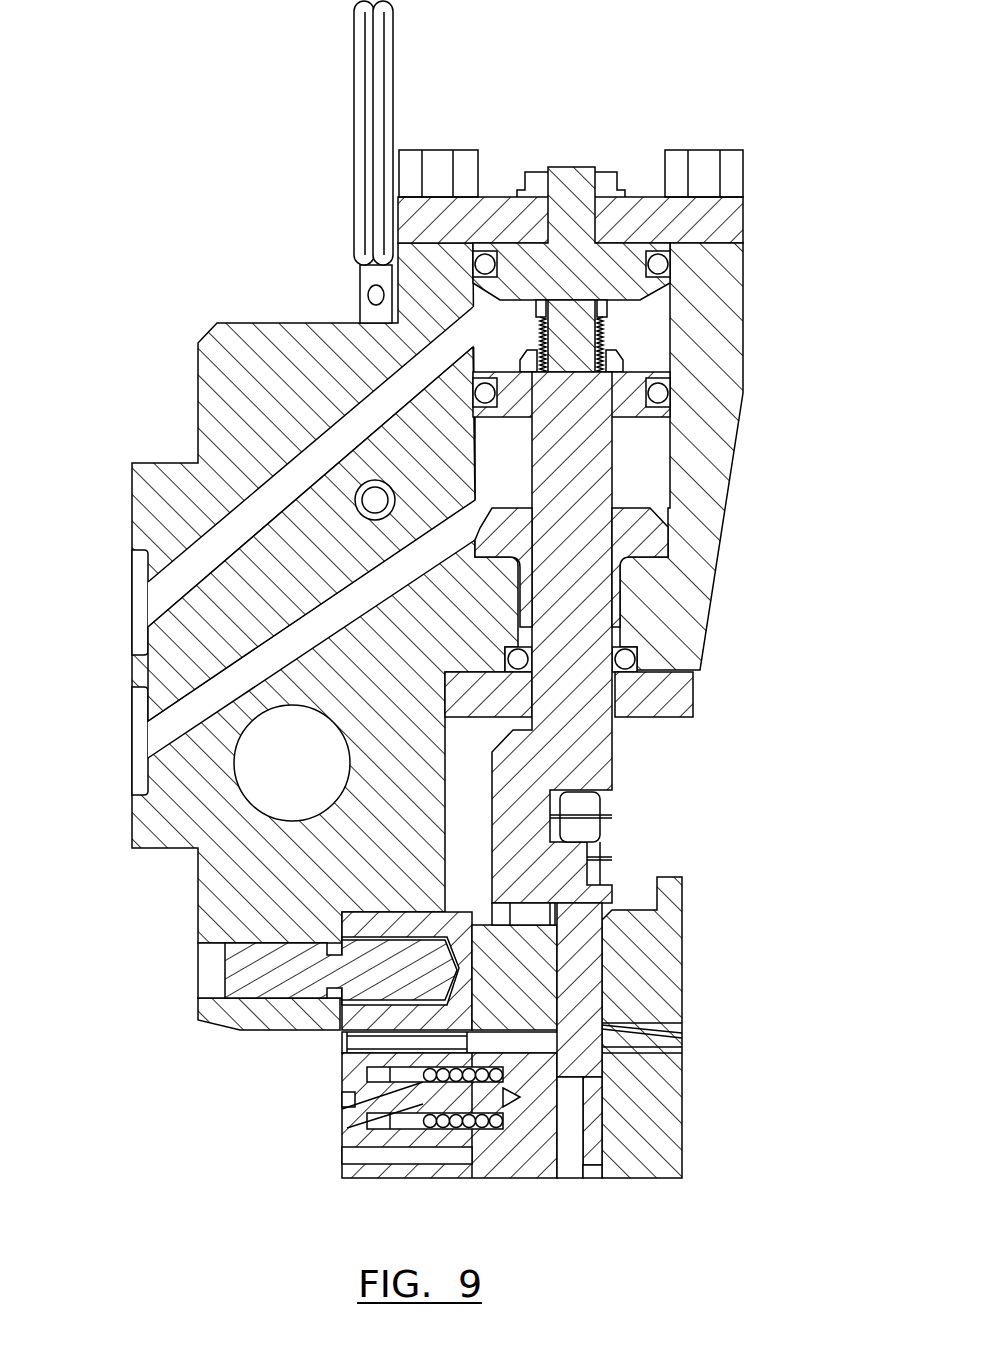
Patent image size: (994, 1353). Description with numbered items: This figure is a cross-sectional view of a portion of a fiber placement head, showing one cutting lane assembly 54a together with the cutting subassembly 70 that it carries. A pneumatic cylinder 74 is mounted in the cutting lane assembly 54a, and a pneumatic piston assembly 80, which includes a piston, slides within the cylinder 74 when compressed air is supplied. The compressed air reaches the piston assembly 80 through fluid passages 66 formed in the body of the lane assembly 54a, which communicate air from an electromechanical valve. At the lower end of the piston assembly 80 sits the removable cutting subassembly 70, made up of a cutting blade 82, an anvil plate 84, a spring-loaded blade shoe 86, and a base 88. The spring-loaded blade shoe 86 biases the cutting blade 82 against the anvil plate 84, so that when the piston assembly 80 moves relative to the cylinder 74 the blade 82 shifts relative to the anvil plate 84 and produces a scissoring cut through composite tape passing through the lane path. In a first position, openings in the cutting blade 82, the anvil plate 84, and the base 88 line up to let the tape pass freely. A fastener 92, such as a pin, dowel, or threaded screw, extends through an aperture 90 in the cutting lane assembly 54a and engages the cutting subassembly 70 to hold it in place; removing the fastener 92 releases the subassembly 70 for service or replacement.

The cutting lane assembly 54a is at (702, 95).
The fluid passages 66 is at (228, 568).
The subassembly 70 is at (625, 868).
The pneumatic cylinder 74 is at (672, 468).
The pneumatic piston assembly 80 is at (582, 643).
The cutting blade 82 is at (602, 975).
The anvil plate 84 is at (682, 1007).
The spring-loaded blade shoe 86 is at (515, 1180).
The base 88 is at (357, 1180).
The aperture 90 is at (395, 455).
The fastener 92 is at (364, 276).